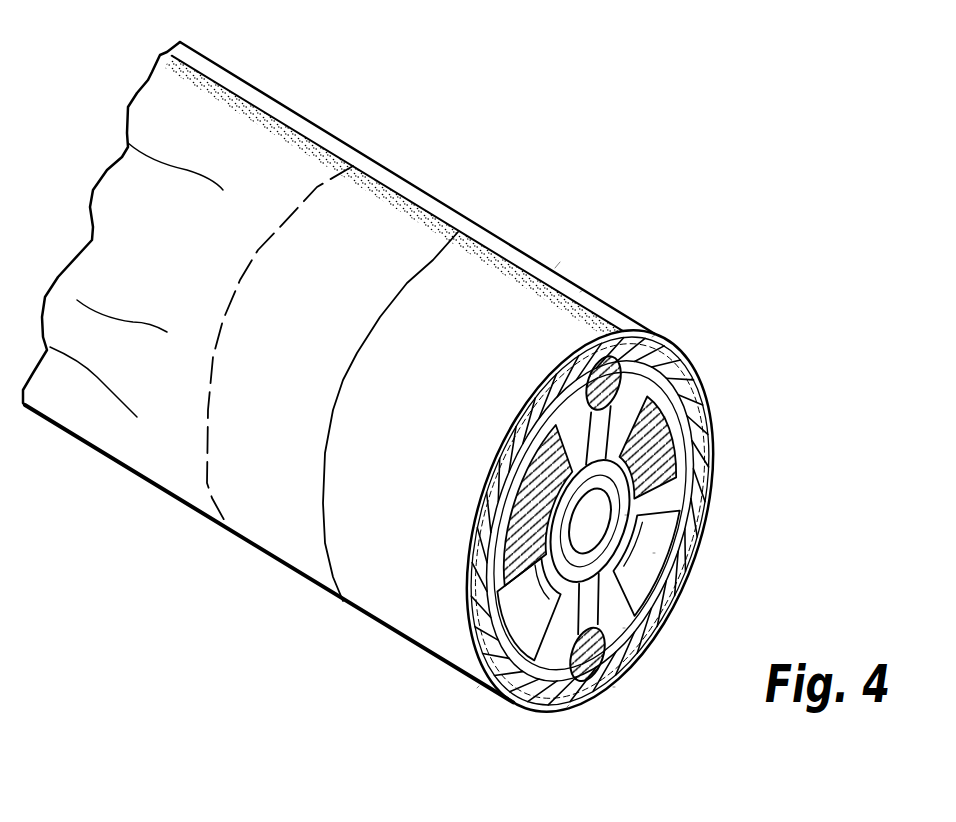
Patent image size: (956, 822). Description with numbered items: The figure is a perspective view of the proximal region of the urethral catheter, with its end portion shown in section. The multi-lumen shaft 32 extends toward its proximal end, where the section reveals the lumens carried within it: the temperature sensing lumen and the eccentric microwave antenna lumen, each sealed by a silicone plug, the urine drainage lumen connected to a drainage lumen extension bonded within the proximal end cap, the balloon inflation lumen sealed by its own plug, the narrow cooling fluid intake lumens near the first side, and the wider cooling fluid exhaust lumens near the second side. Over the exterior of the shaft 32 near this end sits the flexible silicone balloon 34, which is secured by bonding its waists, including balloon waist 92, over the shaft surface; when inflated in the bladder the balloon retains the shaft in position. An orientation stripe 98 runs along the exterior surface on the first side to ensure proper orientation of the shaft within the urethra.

The balloon 34 is at (287, 106).
The orientation stripe 98 is at (415, 203).
The balloon waist 92 is at (460, 217).
The shaft 32 is at (570, 521).